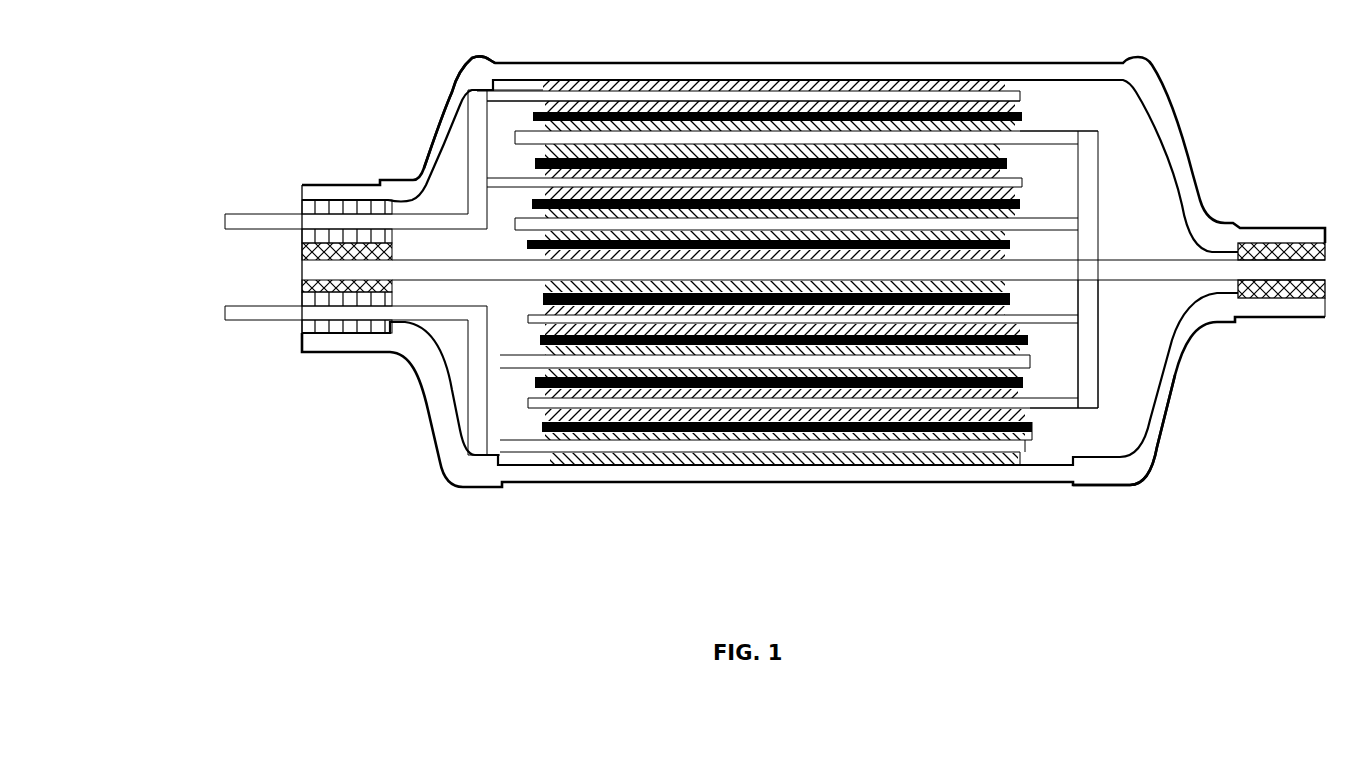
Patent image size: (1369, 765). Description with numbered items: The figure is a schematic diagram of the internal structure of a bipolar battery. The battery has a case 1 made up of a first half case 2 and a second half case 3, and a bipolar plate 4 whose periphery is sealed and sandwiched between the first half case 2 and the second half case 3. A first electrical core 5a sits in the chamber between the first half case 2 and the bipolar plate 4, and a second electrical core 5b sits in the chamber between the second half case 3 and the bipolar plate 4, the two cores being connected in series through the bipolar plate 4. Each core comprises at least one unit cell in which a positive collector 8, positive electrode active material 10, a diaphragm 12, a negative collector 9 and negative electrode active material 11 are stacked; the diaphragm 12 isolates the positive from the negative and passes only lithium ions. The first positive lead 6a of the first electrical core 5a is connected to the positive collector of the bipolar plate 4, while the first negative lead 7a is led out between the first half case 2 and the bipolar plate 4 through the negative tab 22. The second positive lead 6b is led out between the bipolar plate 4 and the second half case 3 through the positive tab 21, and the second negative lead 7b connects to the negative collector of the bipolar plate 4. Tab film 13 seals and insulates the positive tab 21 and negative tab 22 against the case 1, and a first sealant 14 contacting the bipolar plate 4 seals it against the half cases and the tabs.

The case 1 is at (737, 297).
The first half case 2 is at (1013, 75).
The second half case 3 is at (508, 477).
The bipolar plate 4 is at (1145, 262).
The first electrical core 5a is at (470, 87).
The second electrical core 5b is at (1030, 350).
The first positive lead 6a is at (1090, 200).
The second positive lead 6b is at (473, 395).
The first negative lead 7a is at (472, 138).
The second negative lead 7b is at (1088, 383).
The positive collector 8 is at (840, 220).
The negative collector 9 is at (593, 143).
The positive electrode active material 10 is at (613, 467).
The negative electrode active material 11 is at (893, 438).
The diaphragm 12 is at (1032, 428).
The tab film 13 is at (333, 205).
The first sealant 14 is at (308, 293).
The positive tab 21 is at (252, 312).
The negative tab 22 is at (280, 222).